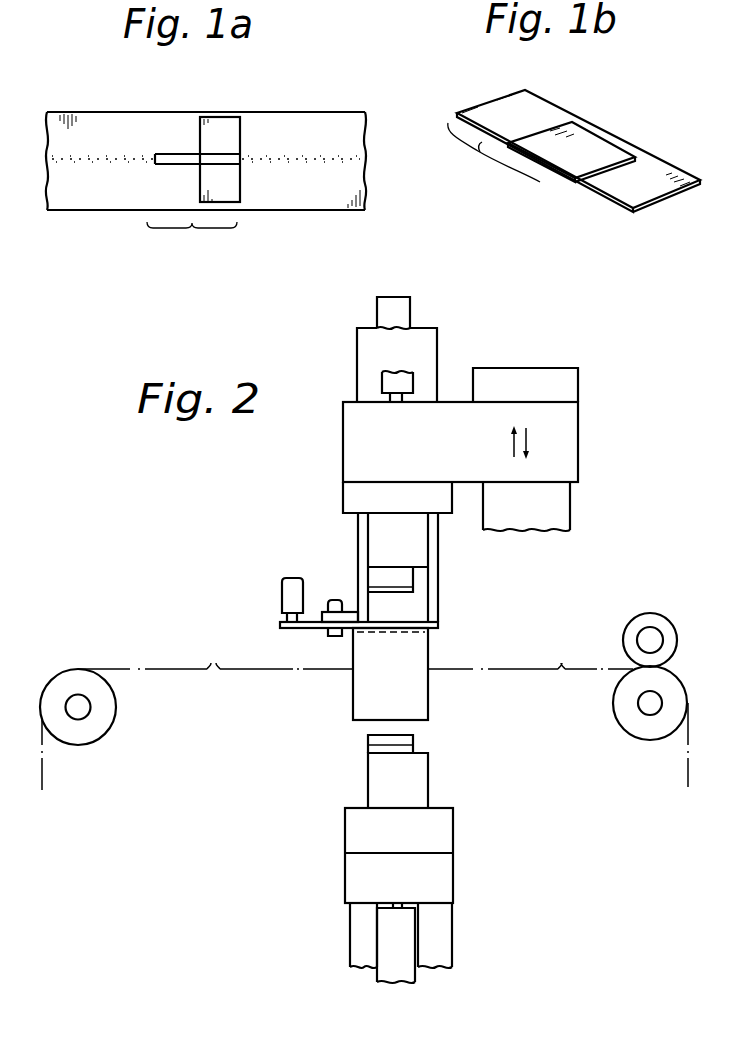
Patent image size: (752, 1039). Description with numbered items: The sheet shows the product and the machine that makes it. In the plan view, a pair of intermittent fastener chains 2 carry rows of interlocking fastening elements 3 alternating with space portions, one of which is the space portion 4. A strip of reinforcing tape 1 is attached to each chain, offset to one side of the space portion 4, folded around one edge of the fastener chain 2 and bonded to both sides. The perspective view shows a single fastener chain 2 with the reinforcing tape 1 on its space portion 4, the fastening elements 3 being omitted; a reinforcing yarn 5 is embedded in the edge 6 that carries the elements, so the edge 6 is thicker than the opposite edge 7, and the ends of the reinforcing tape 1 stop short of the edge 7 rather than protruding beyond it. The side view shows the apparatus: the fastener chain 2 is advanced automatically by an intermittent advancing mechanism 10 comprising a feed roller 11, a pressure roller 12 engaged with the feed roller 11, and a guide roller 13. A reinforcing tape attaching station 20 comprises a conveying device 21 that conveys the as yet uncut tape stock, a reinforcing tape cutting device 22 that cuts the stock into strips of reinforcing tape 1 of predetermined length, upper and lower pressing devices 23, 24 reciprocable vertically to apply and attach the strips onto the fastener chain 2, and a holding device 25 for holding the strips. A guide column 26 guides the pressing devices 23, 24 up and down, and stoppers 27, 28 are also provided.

In FIG. 1a, the reinforcing tape 1 is at (225, 118).
In FIG. 1b, the reinforcing tape 1 is at (590, 144).
In FIG. 2, the reinforcing tape 1 is at (396, 296).
In FIG. 1a, the fastener chain 2 is at (345, 112).
In FIG. 1b, the fastener chain 2 is at (537, 107).
In FIG. 2, the fastener chain 2 is at (155, 672).
In FIG. 1a, the fastening elements 3 is at (96, 152).
In FIG. 1a, the space portion 4 is at (192, 243).
In FIG. 1b, the space portion 4 is at (494, 152).
In FIG. 1b, the reinforcing yarn 5 is at (637, 212).
In FIG. 1b, the edge 6 is at (587, 189).
In FIG. 1b, the opposite edge 7 is at (660, 158).
In FIG. 2, the intermittent advancing mechanism 10 is at (622, 681).
In FIG. 2, the feed roller 11 is at (634, 740).
In FIG. 2, the pressure roller 12 is at (641, 614).
In FIG. 2, the guide roller 13 is at (96, 744).
In FIG. 2, the reinforcing tape attaching station 20 is at (250, 824).
In FIG. 2, the conveying device 21 is at (357, 363).
In FIG. 2, the reinforcing tape cutting device 22 is at (274, 604).
In FIG. 2, the upper pressing device 23 is at (312, 484).
In FIG. 2, the lower pressing device 24 is at (468, 829).
In FIG. 2, the holding device 25 is at (343, 701).
In FIG. 2, the guide column 26 is at (571, 514).
In FIG. 2, the stopper 27 is at (407, 377).
In FIG. 2, the stopper 28 is at (378, 977).